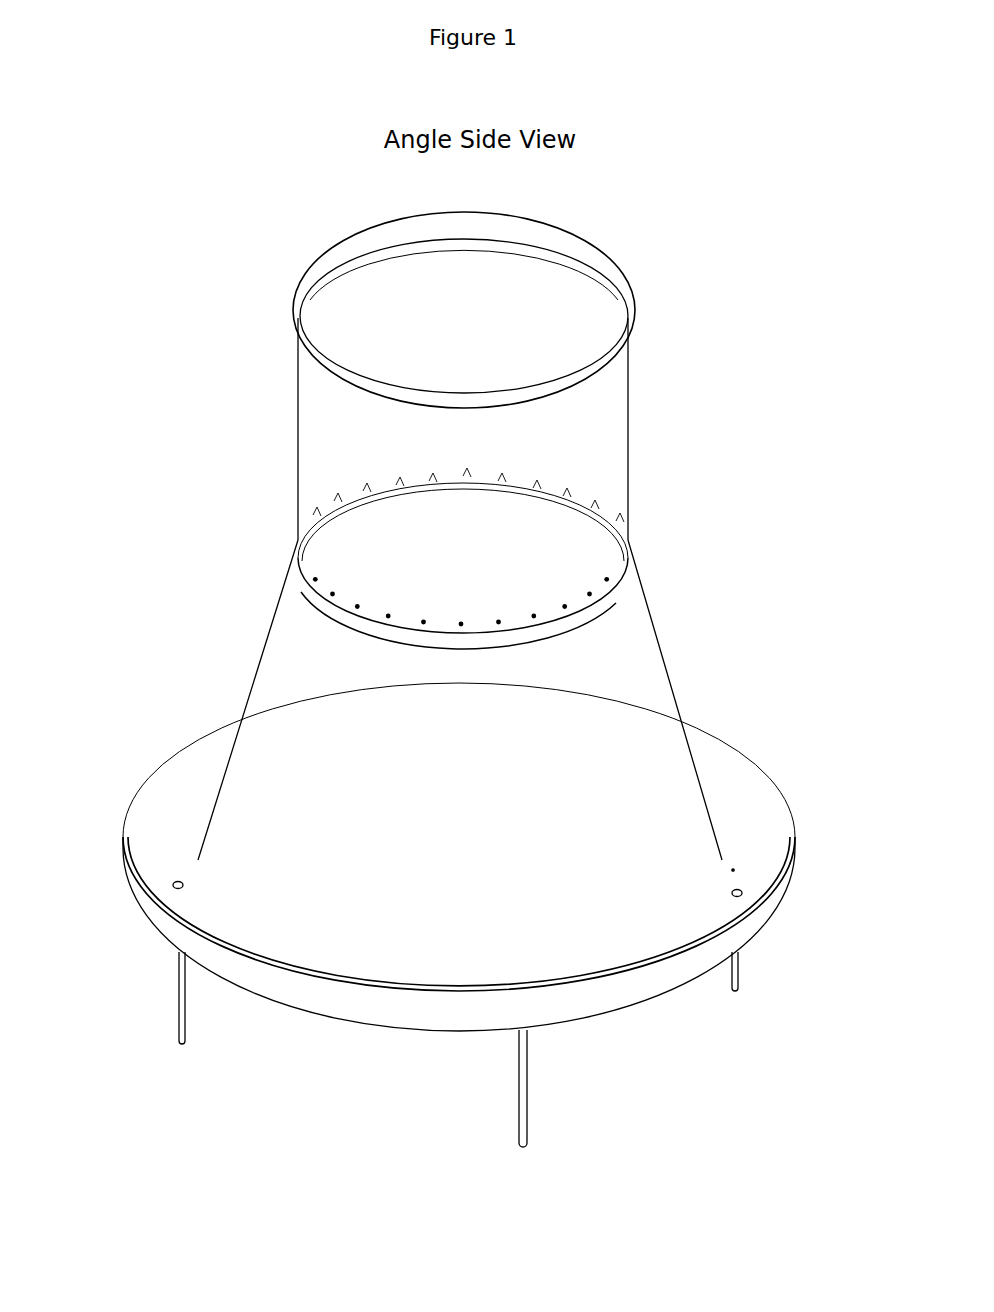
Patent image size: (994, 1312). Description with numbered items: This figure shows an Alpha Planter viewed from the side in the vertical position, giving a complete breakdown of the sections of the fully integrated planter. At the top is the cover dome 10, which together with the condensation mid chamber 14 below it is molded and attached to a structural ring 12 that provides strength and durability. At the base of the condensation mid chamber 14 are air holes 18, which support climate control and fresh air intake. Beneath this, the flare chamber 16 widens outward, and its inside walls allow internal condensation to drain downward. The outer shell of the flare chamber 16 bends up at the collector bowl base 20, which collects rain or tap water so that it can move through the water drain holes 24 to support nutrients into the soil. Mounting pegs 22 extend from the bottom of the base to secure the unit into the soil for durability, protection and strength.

The cover dome 10 is at (497, 222).
The structural ring 12 is at (638, 327).
The condensation mid chamber 14 is at (607, 460).
The flare chamber 16 is at (273, 675).
The air holes 18 is at (617, 570).
The collector bowl base 20 is at (703, 758).
The mounting pegs 22 is at (530, 1072).
The water drain holes 24 is at (172, 880).